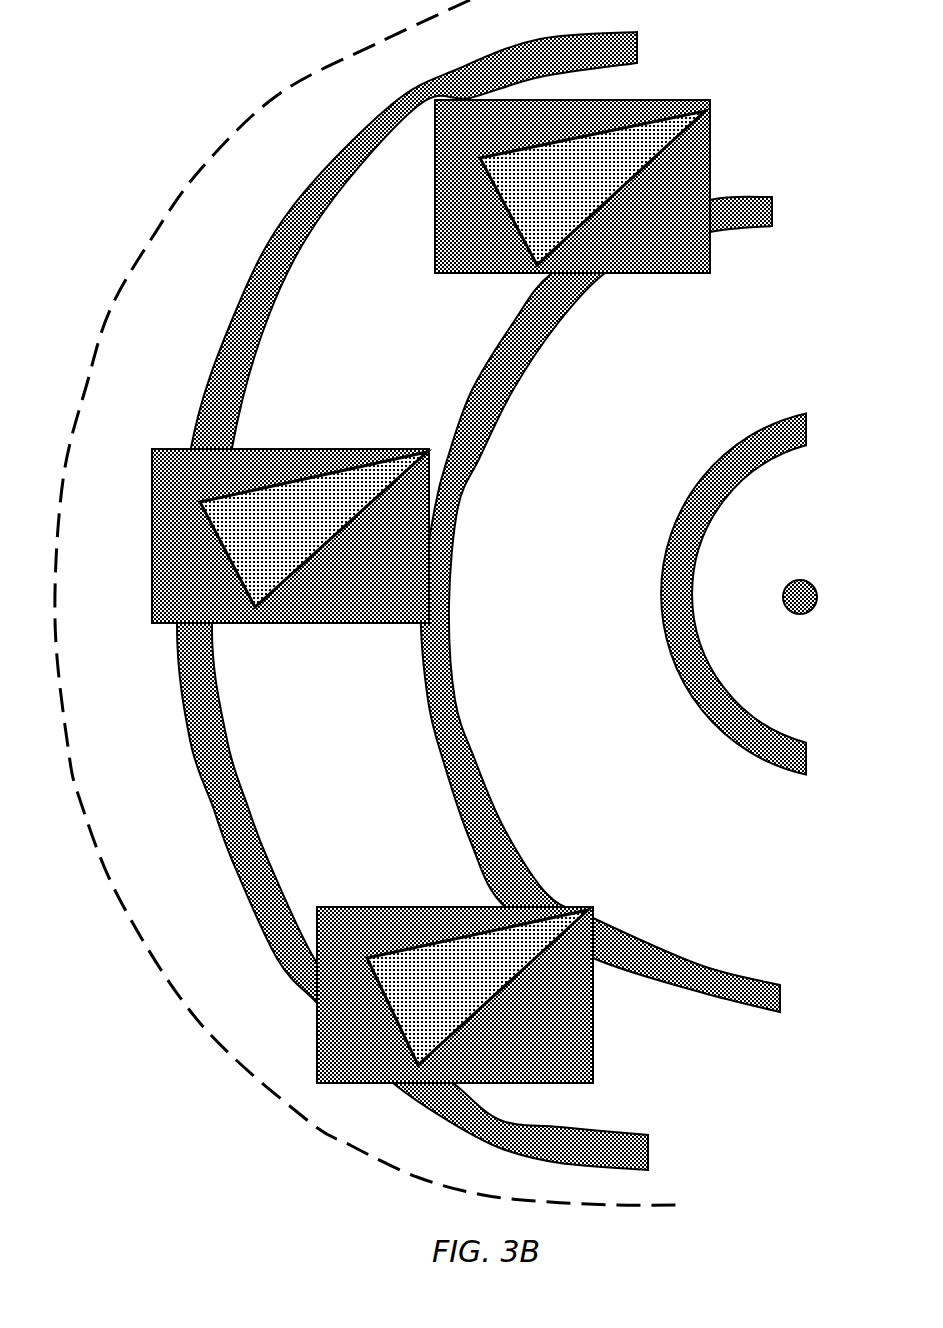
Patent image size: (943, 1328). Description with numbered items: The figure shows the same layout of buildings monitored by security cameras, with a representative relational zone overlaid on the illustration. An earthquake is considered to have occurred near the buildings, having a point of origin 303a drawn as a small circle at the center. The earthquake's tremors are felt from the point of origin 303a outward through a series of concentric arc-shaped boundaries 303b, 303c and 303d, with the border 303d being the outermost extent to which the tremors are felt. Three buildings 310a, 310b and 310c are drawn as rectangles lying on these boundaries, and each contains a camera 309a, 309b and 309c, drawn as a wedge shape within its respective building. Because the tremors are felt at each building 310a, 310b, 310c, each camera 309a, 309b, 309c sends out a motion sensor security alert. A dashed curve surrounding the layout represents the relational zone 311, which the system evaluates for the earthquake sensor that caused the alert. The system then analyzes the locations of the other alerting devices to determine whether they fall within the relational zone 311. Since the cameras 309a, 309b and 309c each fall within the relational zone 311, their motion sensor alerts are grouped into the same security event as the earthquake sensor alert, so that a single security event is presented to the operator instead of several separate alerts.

The point of origin 303a is at (784, 579).
The earthquake tremor boundary 303b is at (698, 593).
The earthquake tremor boundary 303c is at (588, 604).
The border 303d is at (412, 601).
The camera 309a is at (592, 188).
The camera 309b is at (313, 529).
The camera 309c is at (477, 987).
The building 310a is at (572, 186).
The building 310b is at (290, 536).
The building 310c is at (455, 995).
The relational zone 311 is at (278, 93).